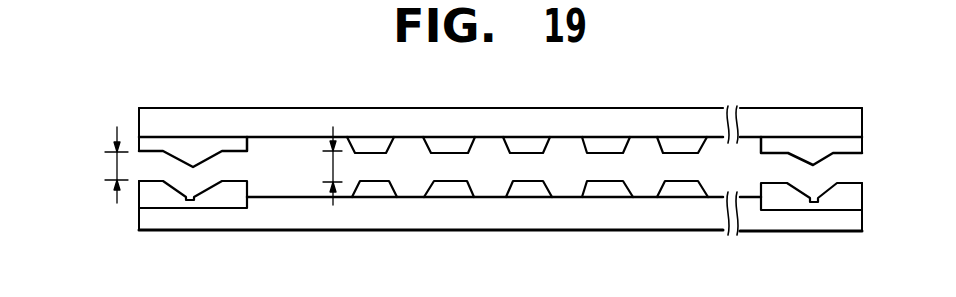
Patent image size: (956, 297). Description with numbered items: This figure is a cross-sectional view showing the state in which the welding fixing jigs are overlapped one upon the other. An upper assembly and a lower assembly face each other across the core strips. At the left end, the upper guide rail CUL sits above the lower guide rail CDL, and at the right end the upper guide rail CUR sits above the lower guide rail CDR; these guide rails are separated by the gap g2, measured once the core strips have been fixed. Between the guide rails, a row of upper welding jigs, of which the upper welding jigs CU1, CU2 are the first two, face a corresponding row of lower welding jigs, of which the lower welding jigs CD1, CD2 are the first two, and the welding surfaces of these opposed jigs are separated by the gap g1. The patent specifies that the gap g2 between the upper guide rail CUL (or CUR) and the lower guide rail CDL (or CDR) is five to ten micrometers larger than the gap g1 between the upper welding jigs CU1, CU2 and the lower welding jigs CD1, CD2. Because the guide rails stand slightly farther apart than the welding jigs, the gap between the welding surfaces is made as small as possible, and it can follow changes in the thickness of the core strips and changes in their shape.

The upper guide rail CUL is at (171, 142).
The upper guide rail CUR is at (822, 143).
The upper welding jig CU1 is at (368, 142).
The upper welding jig CU2 is at (450, 142).
The lower guide rail CDL is at (217, 199).
The lower guide rail CDR is at (844, 200).
The lower welding jig CD1 is at (375, 192).
The lower welding jig CD2 is at (455, 192).
The gap g1 is at (335, 166).
The gap g2 is at (114, 163).